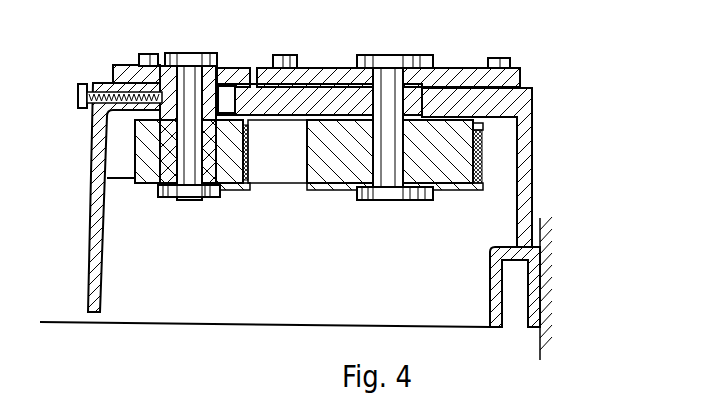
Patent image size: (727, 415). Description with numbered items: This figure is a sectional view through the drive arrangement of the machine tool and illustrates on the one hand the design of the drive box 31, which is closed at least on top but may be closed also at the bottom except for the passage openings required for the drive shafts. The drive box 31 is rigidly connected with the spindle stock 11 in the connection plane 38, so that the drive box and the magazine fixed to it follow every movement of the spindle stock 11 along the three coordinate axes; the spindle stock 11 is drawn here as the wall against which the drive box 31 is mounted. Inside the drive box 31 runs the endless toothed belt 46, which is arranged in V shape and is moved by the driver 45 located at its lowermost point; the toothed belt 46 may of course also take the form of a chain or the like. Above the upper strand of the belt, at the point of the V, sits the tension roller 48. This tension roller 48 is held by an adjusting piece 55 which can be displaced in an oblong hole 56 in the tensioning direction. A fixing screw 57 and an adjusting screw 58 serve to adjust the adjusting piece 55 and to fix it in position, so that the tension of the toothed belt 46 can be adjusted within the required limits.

The spindle stock 11 is at (545, 250).
The drive box 31 is at (531, 152).
The connection plane 38 is at (530, 290).
The driver 45 is at (345, 180).
The toothed belt 46 is at (280, 172).
The tension roller 48 is at (153, 180).
The adjusting piece 55 is at (127, 65).
The oblong hole 56 is at (228, 104).
The fixing screw 57 is at (148, 54).
The adjusting screw 58 is at (78, 96).